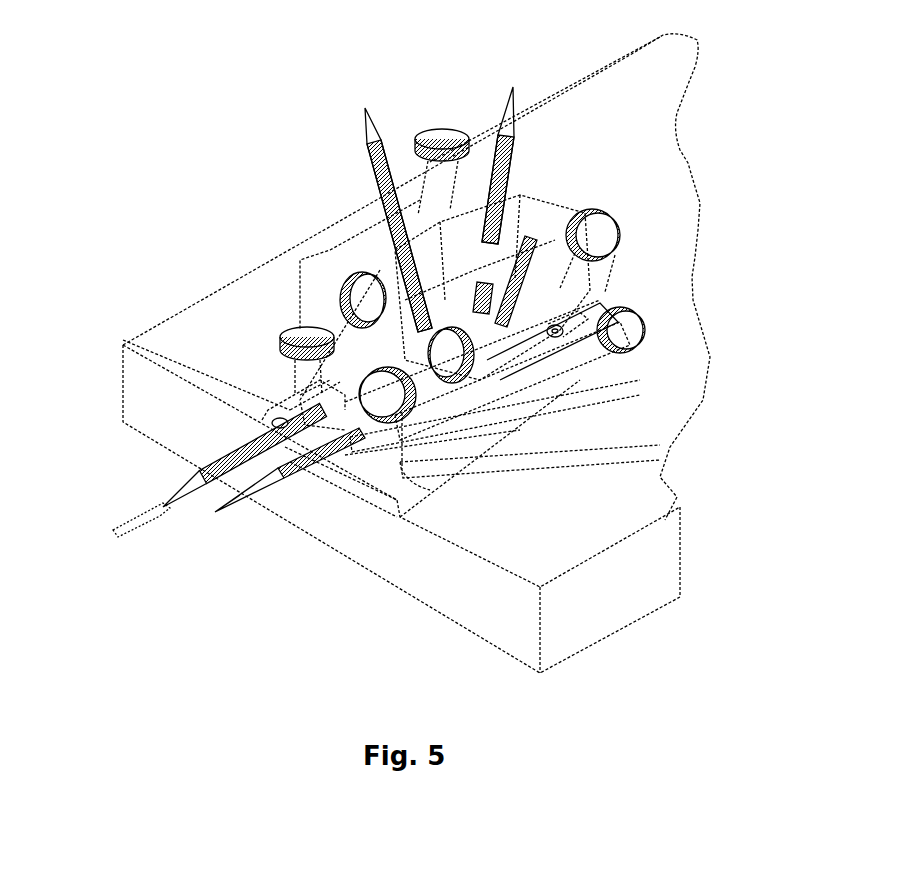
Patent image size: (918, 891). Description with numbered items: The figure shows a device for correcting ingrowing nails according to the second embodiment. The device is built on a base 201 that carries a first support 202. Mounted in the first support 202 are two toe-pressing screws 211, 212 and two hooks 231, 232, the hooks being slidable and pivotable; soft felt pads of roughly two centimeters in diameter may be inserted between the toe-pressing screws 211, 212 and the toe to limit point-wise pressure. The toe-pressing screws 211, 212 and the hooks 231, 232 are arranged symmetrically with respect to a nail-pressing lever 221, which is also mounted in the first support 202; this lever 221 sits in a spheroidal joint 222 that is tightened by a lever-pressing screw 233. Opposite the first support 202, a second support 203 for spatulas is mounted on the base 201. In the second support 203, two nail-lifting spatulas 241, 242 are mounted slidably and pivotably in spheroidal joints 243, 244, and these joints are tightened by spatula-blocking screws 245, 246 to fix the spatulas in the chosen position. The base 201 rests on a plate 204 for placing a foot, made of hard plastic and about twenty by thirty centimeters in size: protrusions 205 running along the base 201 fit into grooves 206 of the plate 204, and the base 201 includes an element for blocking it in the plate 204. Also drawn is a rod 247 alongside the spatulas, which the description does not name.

The base 201 is at (437, 460).
The first support 202 is at (417, 413).
The second support 203 is at (320, 413).
The plate 204 is at (635, 145).
The protrusions 205 is at (397, 517).
The grooves 206 is at (397, 519).
The toe-pressing screw 211 is at (597, 238).
The toe-pressing screw 212 is at (413, 137).
The nail-pressing lever 221 is at (480, 218).
The spheroidal joint 222 is at (495, 250).
The hook 231 is at (516, 272).
The hook 232 is at (410, 262).
The lever-pressing screw 233 is at (497, 305).
The nail-lifting spatula 241 is at (350, 355).
The nail-lifting spatula 242 is at (410, 357).
The spheroidal joint 243 is at (350, 444).
The spheroidal joint 244 is at (310, 405).
The spatula-blocking screw 245 is at (440, 408).
The spatula-blocking screw 246 is at (278, 340).
The tool rod 247 is at (245, 505).